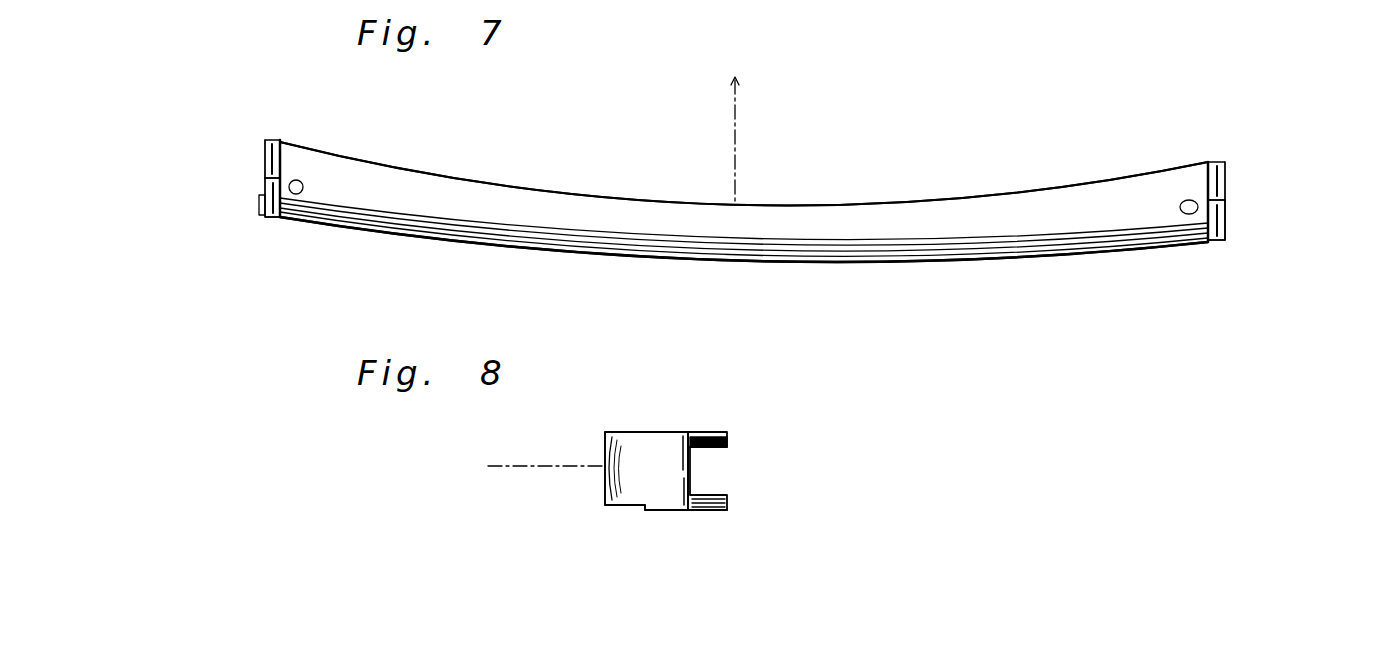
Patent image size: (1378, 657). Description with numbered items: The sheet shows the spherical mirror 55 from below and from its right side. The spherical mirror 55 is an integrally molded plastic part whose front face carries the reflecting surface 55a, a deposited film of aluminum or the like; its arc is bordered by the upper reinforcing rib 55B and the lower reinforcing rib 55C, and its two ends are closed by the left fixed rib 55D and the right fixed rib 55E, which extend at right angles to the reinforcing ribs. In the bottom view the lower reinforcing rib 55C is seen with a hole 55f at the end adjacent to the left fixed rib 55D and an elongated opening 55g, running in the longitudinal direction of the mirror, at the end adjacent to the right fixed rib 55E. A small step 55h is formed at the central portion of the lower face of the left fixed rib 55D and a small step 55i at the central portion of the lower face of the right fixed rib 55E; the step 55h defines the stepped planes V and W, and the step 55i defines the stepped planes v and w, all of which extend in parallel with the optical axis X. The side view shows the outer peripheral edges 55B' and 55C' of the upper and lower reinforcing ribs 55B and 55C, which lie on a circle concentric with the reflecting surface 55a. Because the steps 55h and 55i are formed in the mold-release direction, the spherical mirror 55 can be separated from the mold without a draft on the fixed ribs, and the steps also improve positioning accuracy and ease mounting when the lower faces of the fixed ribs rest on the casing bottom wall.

In FIG. 7, the spherical mirror 55 is at (1110, 190).
In FIG. 7, the reflecting surface 55a is at (842, 205).
In FIG. 8, the reflecting surface 55a is at (607, 447).
In FIG. 7, the lower reinforcing rib 55C is at (744, 272).
In FIG. 8, the lower reinforcing rib 55C is at (748, 557).
In FIG. 7, the left fixed rib 55D is at (276, 140).
In FIG. 7, the right fixed rib 55E is at (1215, 162).
In FIG. 8, the right fixed rib 55E is at (650, 442).
In FIG. 7, the hole 55f is at (297, 197).
In FIG. 7, the elongated opening 55g is at (1188, 217).
In FIG. 7, the small step 55h is at (277, 185).
In FIG. 7, the small step 55i is at (1225, 212).
In FIG. 8, the small step 55i is at (643, 508).
In FIG. 8, the upper reinforcing rib 55B is at (755, 404).
In FIG. 8, the outer peripheral edge of upper reinforcing rib 55B' is at (772, 442).
In FIG. 8, the outer peripheral edge of lower reinforcing rib 55C' is at (772, 509).
In FIG. 7, the stepped plane V is at (265, 160).
In FIG. 7, the stepped plane W is at (270, 218).
In FIG. 7, the stepped plane v is at (1225, 183).
In FIG. 8, the stepped plane v is at (618, 508).
In FIG. 7, the stepped plane w is at (1223, 223).
In FIG. 8, the stepped plane w is at (673, 512).
In FIG. 7, the optical axis X is at (736, 125).
In FIG. 8, the optical axis X is at (530, 467).